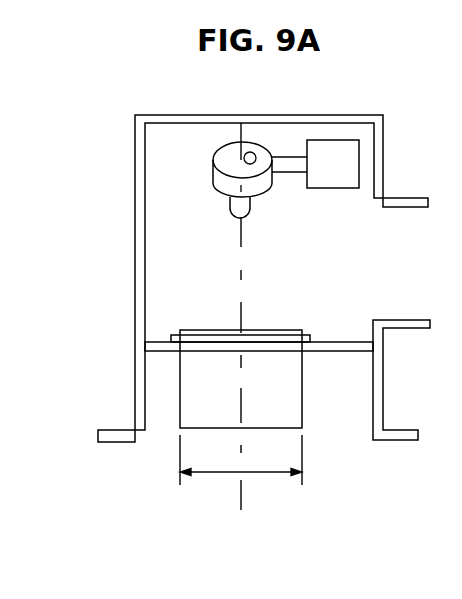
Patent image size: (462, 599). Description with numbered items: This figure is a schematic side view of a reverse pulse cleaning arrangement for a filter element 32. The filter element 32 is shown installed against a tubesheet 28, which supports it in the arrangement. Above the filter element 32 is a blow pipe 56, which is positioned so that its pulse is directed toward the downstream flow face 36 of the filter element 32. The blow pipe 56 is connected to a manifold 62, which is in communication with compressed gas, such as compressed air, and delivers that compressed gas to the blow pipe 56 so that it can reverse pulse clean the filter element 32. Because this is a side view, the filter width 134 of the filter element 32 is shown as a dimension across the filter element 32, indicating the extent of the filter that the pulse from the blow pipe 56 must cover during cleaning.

The tubesheet 28 is at (337, 352).
The filter element 32 is at (174, 384).
The downstream flow face 36 is at (255, 330).
The blow pipe 56 is at (232, 203).
The manifold 62 is at (331, 150).
The filter width 134 is at (212, 473).